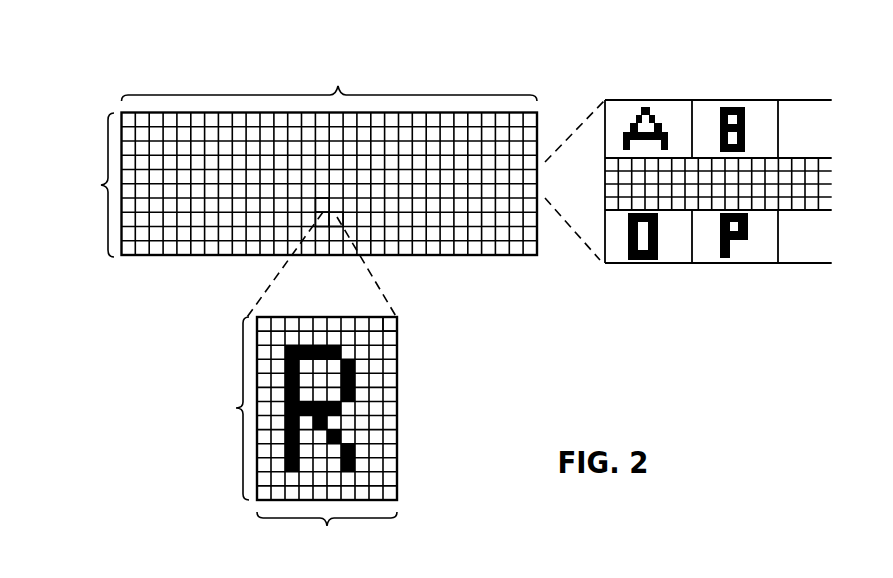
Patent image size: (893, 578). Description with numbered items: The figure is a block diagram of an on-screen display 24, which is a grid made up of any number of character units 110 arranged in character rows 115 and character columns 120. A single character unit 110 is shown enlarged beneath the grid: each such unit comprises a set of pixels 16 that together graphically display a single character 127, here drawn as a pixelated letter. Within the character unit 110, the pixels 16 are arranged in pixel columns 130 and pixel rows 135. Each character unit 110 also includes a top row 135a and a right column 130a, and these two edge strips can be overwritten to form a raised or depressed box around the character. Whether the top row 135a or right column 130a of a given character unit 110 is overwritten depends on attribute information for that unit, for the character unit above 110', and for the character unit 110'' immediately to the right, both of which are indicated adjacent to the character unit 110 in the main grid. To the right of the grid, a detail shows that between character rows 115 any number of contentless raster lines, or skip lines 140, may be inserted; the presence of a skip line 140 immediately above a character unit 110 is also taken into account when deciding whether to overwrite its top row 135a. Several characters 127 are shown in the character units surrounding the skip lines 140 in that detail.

The on-screen display 24 is at (119, 72).
The character columns 120 is at (330, 79).
The character rows 115 is at (88, 185).
The character unit 110 is at (257, 254).
The character unit above 110' is at (420, 246).
The character unit immediately to the right 110'' is at (386, 246).
The character 127 is at (516, 255).
The right column 130a is at (385, 318).
The top row 135a is at (399, 323).
The pixels 16 is at (373, 350).
The pixel rows 135 is at (221, 408).
The pixel columns 130 is at (327, 534).
The skip lines 140 is at (605, 208).